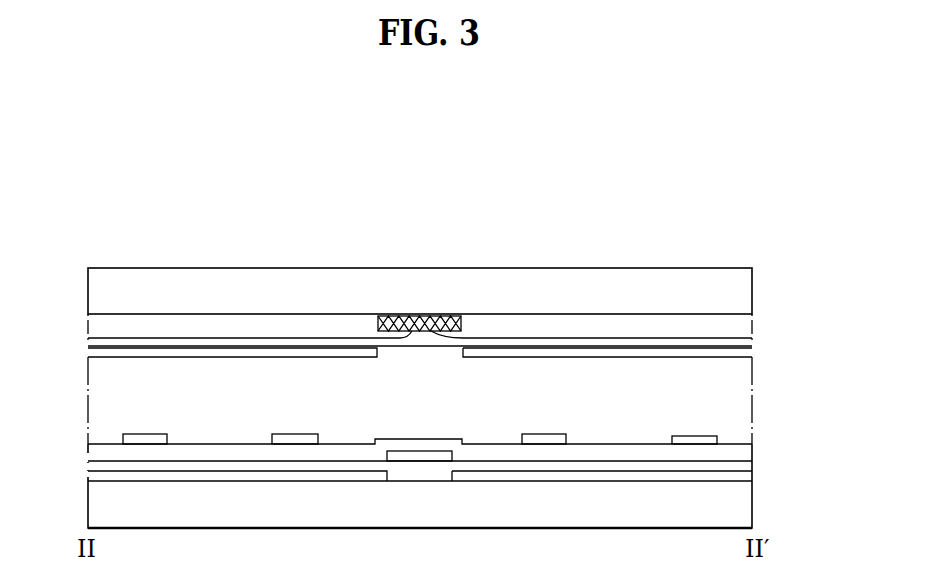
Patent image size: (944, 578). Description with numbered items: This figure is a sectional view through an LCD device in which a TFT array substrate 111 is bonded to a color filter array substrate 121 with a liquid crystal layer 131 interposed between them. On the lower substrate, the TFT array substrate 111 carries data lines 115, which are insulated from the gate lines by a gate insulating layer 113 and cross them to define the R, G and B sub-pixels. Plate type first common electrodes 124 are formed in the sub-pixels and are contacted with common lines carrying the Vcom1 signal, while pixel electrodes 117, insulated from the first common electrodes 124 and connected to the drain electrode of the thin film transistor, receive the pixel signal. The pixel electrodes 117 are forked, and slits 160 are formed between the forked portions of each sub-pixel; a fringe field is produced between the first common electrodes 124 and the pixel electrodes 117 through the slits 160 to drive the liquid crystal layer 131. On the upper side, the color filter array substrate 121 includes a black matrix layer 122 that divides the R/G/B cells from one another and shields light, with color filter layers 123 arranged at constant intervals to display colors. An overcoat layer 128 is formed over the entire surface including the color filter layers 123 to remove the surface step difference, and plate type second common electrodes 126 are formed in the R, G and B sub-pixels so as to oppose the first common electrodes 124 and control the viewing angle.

The color filter array substrate 121 is at (752, 290).
The color filter layers 123 is at (331, 318).
The black matrix layer 122 is at (432, 315).
The overcoat layer 128 is at (740, 344).
The second common electrodes 126 is at (752, 352).
The liquid crystal layer 131 is at (744, 385).
The pixel electrodes 117 is at (700, 440).
The slits 160 is at (681, 428).
The data lines 115 is at (411, 455).
The gate insulating layer 113 is at (752, 466).
The first common electrodes 124 is at (752, 480).
The TFT array substrate 111 is at (744, 513).